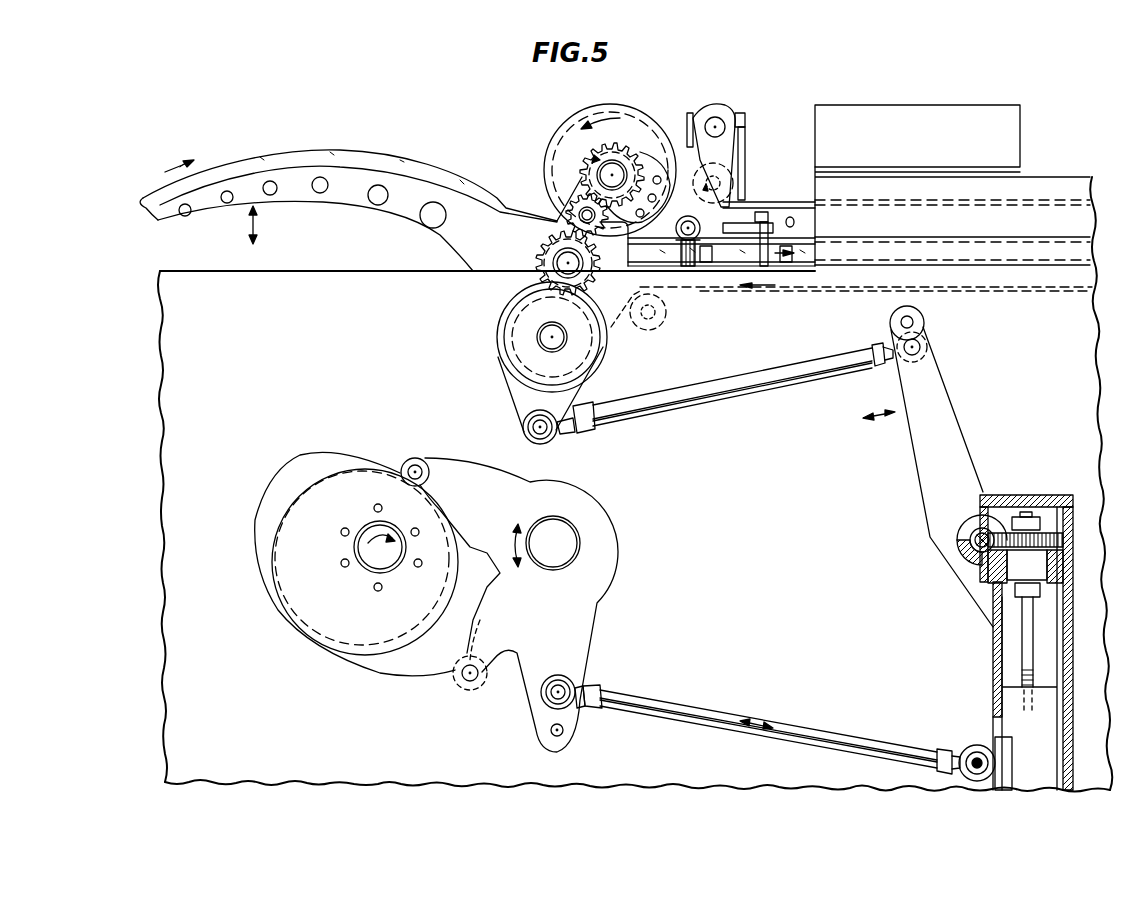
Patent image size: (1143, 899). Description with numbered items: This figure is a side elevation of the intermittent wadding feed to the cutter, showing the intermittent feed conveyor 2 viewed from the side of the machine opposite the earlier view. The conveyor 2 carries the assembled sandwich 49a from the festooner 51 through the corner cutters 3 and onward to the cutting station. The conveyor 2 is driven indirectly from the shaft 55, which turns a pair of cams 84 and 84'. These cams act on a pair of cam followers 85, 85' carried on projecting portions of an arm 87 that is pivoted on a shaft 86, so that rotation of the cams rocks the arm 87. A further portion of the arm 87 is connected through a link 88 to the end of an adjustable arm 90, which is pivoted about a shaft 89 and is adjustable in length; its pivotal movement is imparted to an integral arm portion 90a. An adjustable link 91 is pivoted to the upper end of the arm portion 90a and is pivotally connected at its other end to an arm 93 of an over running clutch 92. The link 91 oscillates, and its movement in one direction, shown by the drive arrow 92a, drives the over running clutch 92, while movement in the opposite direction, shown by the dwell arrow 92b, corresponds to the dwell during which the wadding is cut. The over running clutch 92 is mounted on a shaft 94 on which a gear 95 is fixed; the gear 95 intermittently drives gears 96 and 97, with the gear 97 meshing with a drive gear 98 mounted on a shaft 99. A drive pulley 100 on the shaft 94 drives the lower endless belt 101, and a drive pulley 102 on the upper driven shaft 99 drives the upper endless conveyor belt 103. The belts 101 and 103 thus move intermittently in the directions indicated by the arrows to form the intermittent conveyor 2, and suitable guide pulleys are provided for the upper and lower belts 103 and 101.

The intermittent feed conveyor 2 is at (800, 195).
The corner cutters 3 is at (910, 106).
The assembled sandwich 49a is at (247, 163).
The festooner 51 is at (302, 197).
The shaft 55 is at (392, 557).
The cam 84 is at (367, 580).
The cam 84' is at (365, 574).
The cam follower 85 is at (470, 695).
The cam follower 85' is at (415, 461).
The shaft 86 is at (553, 560).
The arm 87 is at (577, 650).
The link 88 is at (712, 710).
The shaft 89 is at (980, 540).
The adjustable arm 90 is at (995, 657).
The integral arm portion 90a is at (936, 463).
The adjustable link 91 is at (725, 375).
The over running clutch 92 is at (563, 369).
The drive arrow 92a is at (670, 375).
The dwell arrow 92b is at (849, 339).
The arm 93 is at (520, 398).
The shaft 94 is at (553, 324).
The gear 95 is at (520, 340).
The gear 96 is at (537, 259).
The gear 97 is at (557, 222).
The drive gear 98 is at (583, 173).
The shaft 99 is at (614, 175).
The drive pulley 100 is at (605, 345).
The lower endless belt 101 is at (975, 292).
The drive pulley 102 is at (628, 125).
The upper endless conveyor belt 103 is at (738, 182).